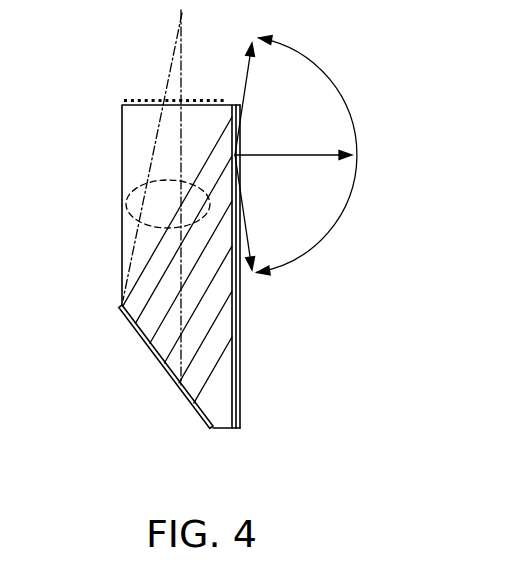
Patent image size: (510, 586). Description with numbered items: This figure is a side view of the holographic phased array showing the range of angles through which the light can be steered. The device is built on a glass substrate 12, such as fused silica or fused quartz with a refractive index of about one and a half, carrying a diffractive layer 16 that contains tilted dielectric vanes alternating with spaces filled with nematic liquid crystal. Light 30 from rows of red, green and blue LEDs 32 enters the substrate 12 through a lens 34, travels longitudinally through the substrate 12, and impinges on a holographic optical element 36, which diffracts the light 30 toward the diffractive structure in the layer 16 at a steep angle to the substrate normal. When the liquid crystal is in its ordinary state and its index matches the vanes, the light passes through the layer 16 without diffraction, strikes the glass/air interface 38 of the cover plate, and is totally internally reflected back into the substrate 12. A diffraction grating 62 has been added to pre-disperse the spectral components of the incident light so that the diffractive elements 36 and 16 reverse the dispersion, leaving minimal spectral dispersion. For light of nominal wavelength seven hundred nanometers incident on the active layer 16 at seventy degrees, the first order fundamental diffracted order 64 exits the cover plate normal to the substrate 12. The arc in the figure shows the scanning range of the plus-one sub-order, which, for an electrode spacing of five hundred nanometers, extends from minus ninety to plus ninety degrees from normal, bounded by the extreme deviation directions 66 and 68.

The glass substrate 12 is at (122, 121).
The diffractive layer 16 is at (233, 428).
The light 30 is at (173, 57).
The LEDs 32 is at (183, 14).
The lens 34 is at (128, 190).
The holographic optical element 36 is at (143, 336).
The glass/air interface 38 is at (242, 342).
The diffraction grating 62 is at (155, 98).
The first order fundamental diffracted order 64 is at (282, 155).
The upward direction arrow 66 is at (248, 83).
The downward direction arrow 68 is at (250, 230).